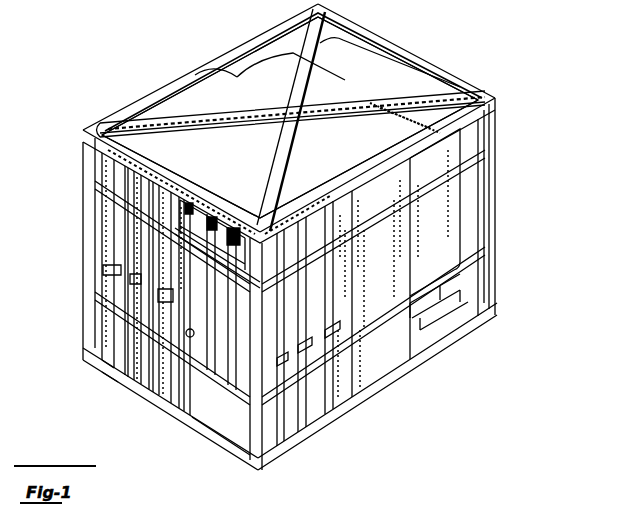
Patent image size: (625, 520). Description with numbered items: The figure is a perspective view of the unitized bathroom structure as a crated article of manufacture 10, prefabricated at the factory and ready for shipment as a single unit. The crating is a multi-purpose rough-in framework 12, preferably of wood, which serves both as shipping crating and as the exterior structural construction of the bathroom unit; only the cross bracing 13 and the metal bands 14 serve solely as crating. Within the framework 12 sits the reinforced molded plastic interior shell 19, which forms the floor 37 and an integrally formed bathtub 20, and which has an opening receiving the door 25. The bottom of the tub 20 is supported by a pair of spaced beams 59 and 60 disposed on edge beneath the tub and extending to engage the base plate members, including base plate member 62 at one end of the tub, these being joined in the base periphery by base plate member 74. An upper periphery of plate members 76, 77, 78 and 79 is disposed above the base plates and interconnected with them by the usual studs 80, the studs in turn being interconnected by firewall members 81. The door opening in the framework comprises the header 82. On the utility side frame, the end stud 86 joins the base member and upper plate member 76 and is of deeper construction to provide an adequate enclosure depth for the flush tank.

The crated article of manufacture 10 is at (62, 350).
The rough-in framework 12 is at (84, 267).
The cross bracing 13 is at (341, 104).
The metal bands 14 is at (392, 220).
The interior shell 19 is at (462, 218).
The bathtub 20 is at (490, 256).
The door 25 is at (223, 354).
The floor 37 is at (207, 431).
The beam 59 is at (472, 320).
The beam 60 is at (448, 338).
The base plate member 62 is at (314, 423).
The base plate member 74 is at (118, 370).
The upper plate member 76 is at (209, 70).
The upper plate member 77 is at (337, 181).
The upper plate member 78 is at (177, 174).
The upper plate member 79 is at (415, 61).
The studs 80 is at (356, 277).
The firewall members 81 is at (334, 306).
The header 82 is at (228, 251).
The end stud 86 is at (90, 240).